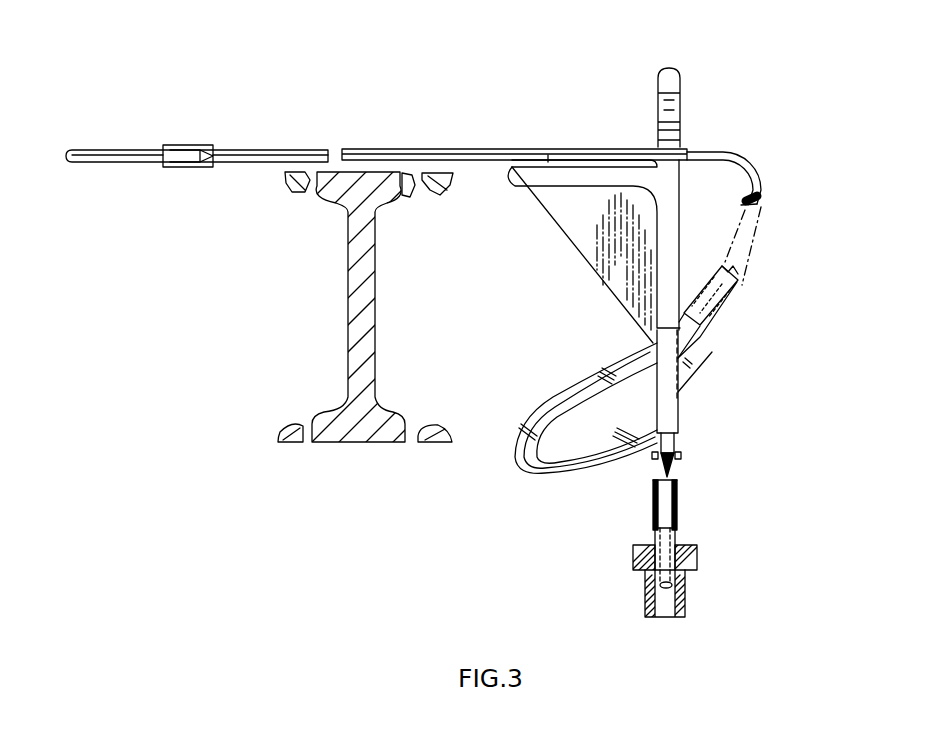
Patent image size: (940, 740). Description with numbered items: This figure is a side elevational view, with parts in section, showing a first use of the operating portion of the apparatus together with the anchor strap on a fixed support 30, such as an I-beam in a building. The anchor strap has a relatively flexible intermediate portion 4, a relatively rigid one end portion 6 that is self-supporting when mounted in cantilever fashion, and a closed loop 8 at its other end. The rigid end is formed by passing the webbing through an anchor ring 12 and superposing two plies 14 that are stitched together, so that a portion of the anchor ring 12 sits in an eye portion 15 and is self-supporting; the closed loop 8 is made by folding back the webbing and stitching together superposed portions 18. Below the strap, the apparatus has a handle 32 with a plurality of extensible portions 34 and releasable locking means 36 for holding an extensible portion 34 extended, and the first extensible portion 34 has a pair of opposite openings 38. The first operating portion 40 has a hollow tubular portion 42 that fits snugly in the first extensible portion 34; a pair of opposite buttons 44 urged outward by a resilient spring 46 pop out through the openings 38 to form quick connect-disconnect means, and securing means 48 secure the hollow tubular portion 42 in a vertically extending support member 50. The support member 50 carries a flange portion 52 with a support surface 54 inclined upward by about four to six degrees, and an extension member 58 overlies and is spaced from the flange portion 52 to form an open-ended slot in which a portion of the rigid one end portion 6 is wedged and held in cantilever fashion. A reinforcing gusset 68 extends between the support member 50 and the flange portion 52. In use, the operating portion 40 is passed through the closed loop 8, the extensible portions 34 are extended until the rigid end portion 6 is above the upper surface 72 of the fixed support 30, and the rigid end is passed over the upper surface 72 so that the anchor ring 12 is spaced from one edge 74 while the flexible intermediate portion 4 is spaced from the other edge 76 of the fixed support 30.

The relatively flexible intermediate portion 4 is at (768, 171).
The relatively rigid one end portion 6 is at (360, 149).
The closed loop 8 is at (578, 388).
The anchor ring 12 is at (108, 150).
The plies 14 is at (447, 149).
The eye portion 15 is at (205, 168).
The superposed portions 18 is at (722, 308).
The fixed support 30 is at (348, 322).
The handle 32 is at (628, 577).
The extensible portion 34 is at (686, 590).
The releasable locking means 36 is at (698, 556).
The openings 38 is at (655, 522).
The first operating portion 40 is at (772, 245).
The hollow tubular portion 42 is at (674, 444).
The buttons 44 is at (655, 460).
The resilient spring 46 is at (650, 481).
The securing means 48 is at (665, 422).
The vertically extending support member 50 is at (668, 242).
The flange portion 52 is at (590, 176).
The support surface 54 is at (553, 157).
The extension member 58 is at (682, 78).
The reinforcing gusset 68 is at (617, 283).
The upper surface 72 is at (410, 197).
The one edge 74 is at (284, 178).
The other edge 76 is at (443, 196).